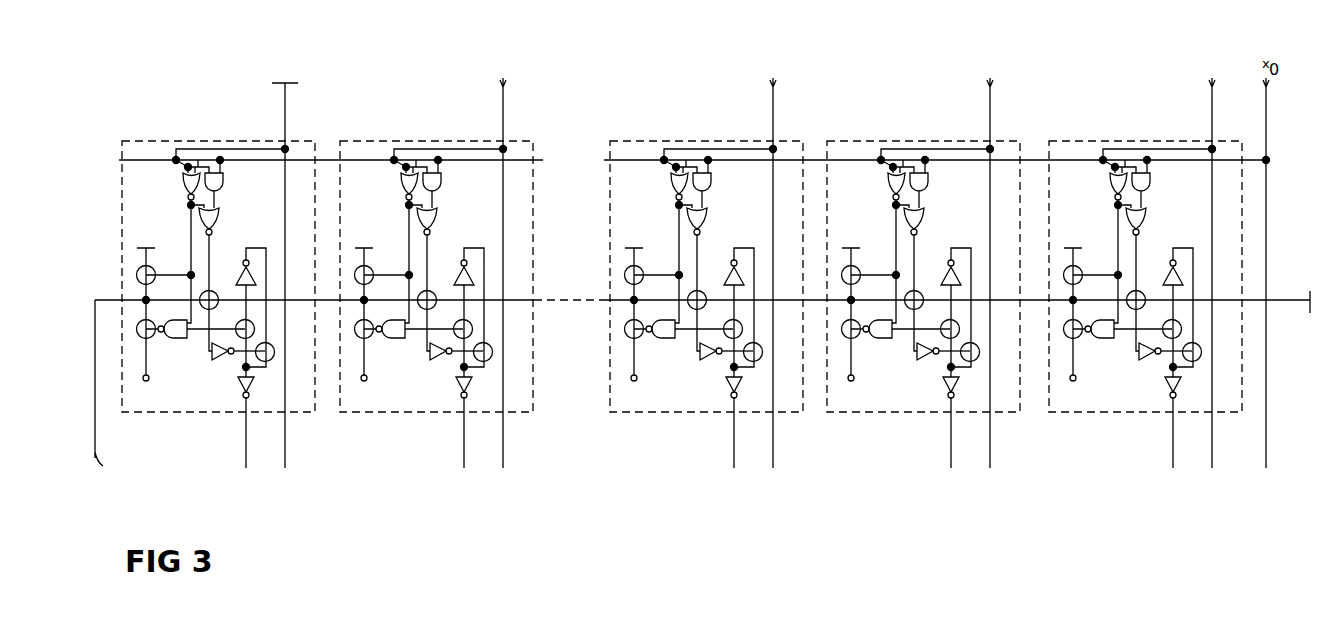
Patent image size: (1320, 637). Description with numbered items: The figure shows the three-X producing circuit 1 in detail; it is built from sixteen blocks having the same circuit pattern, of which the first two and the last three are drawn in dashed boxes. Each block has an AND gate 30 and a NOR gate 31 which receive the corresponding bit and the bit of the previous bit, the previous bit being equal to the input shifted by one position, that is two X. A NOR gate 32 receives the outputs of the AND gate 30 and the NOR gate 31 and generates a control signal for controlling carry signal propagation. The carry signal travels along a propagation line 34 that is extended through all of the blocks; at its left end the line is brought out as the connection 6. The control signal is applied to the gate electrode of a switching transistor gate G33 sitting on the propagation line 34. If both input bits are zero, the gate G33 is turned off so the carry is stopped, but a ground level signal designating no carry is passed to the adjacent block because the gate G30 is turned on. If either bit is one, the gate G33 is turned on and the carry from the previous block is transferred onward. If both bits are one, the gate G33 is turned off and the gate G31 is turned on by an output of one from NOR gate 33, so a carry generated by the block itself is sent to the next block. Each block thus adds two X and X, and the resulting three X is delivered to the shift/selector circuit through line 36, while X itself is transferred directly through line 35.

The 3X producing circuit 1 is at (682, 295).
The common bus line 6 is at (106, 394).
The AND gate 30 is at (1158, 190).
The NOR gate 31 is at (1103, 188).
The NOR gate 32 is at (1150, 226).
The NOR gate 33 is at (1108, 344).
The propagation line 34 is at (1274, 300).
The line 35 is at (761, 267).
The line 36 is at (696, 438).
The gate G30 is at (1089, 272).
The gate G31 is at (1086, 342).
The switching transistor gate G33 is at (1148, 287).